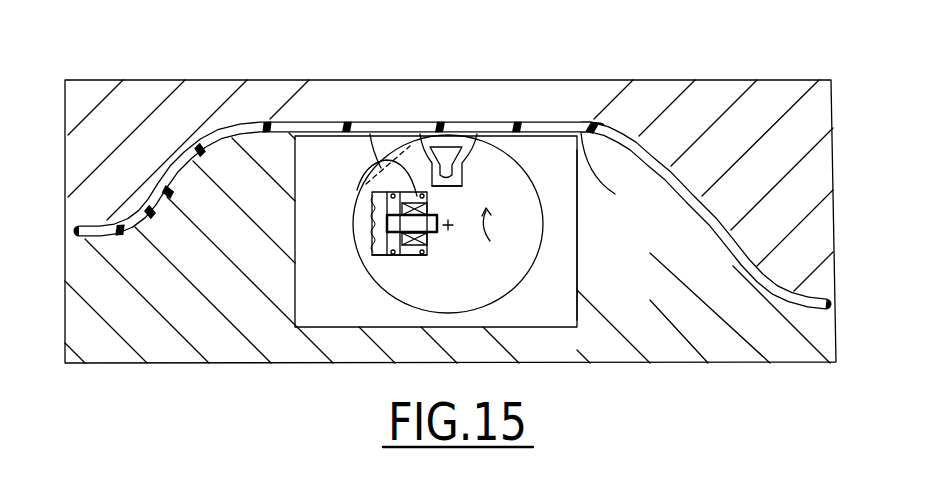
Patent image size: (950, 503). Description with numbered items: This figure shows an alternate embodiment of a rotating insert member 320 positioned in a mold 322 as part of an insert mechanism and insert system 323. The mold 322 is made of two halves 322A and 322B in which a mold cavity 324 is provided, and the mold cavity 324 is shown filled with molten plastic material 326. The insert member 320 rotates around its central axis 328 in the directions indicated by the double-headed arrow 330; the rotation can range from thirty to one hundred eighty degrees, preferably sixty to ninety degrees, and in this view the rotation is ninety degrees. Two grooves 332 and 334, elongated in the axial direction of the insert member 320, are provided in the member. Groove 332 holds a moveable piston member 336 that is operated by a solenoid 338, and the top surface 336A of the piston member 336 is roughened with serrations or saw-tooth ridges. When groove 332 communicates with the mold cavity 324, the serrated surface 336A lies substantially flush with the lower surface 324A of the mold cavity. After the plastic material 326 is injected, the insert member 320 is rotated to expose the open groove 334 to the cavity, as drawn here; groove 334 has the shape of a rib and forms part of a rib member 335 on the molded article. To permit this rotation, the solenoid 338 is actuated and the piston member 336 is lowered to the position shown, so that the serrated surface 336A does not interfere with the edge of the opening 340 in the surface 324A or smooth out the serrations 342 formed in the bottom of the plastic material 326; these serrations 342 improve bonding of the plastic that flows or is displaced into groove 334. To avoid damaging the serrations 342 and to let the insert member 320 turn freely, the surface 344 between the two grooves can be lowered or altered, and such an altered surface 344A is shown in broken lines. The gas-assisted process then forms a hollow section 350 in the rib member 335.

The rotating insert member 320 is at (518, 268).
The mold 322 is at (107, 347).
The mold half 322A is at (811, 94).
The mold half 322B is at (806, 352).
The insert system 323 is at (570, 252).
The mold cavity 324 is at (563, 122).
The lower surface of the mold cavity 324A is at (629, 172).
The molten plastic material 326 is at (291, 123).
The central axis 328 is at (451, 238).
The double-headed arrow 330 is at (509, 223).
The groove 332 is at (393, 253).
The groove 334 is at (473, 165).
The rib member 335 is at (463, 183).
The piston member 336 is at (388, 228).
The top surface of the piston member 336A is at (372, 208).
The solenoid 338 is at (372, 167).
The opening 340 is at (440, 123).
The serrations 342 is at (462, 133).
The surface 344 is at (370, 133).
The lowered surface 344A is at (390, 133).
The hollow section 350 is at (483, 133).